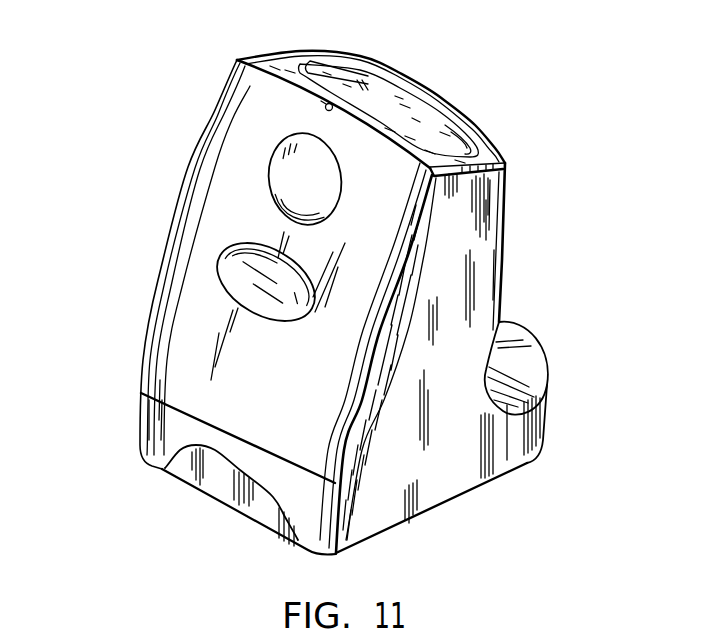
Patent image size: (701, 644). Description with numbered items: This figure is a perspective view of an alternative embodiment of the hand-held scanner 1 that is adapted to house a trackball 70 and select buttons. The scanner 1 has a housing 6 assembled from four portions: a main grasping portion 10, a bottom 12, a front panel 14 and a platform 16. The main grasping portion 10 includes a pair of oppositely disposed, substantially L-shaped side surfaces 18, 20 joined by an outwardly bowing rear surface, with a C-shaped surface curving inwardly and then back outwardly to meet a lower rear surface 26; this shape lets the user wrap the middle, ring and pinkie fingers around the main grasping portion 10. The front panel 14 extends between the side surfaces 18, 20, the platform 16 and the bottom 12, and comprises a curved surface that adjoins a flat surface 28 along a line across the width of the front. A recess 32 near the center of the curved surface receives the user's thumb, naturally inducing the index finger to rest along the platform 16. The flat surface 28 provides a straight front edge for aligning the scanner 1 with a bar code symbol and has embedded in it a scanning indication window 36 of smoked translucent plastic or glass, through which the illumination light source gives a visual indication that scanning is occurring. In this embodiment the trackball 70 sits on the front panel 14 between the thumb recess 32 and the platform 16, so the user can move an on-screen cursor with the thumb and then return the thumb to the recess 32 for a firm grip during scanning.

The scanner 1 is at (470, 97).
The housing 6 is at (208, 92).
The main grasping portion 10 is at (477, 303).
The bottom 12 is at (443, 502).
The front panel 14 is at (197, 213).
The platform 16 is at (313, 50).
The side surface 18 is at (492, 192).
The side surface 20 is at (287, 52).
The lower rear surface 26 is at (163, 360).
The flat surface 28 is at (155, 427).
The recess 32 is at (240, 270).
The scanning indication window 36 is at (212, 482).
The trackball 70 is at (282, 167).